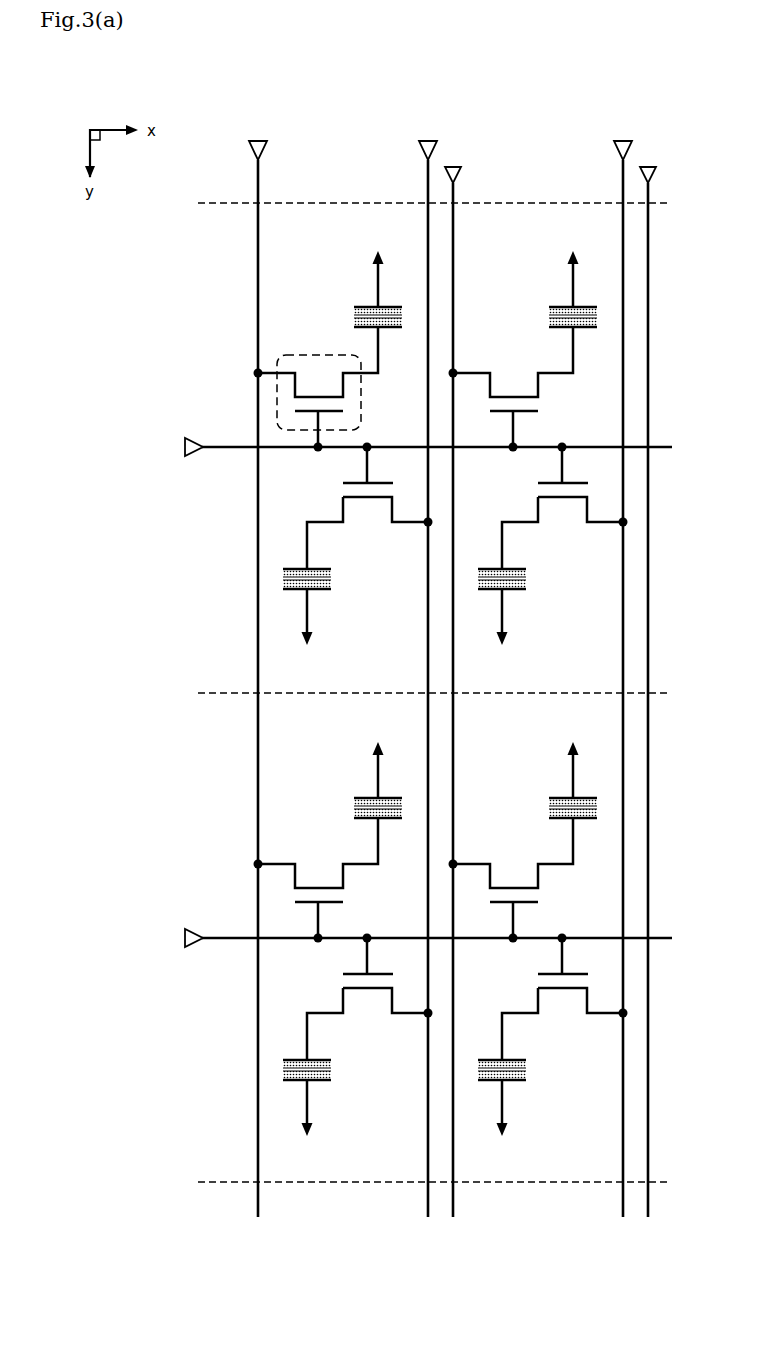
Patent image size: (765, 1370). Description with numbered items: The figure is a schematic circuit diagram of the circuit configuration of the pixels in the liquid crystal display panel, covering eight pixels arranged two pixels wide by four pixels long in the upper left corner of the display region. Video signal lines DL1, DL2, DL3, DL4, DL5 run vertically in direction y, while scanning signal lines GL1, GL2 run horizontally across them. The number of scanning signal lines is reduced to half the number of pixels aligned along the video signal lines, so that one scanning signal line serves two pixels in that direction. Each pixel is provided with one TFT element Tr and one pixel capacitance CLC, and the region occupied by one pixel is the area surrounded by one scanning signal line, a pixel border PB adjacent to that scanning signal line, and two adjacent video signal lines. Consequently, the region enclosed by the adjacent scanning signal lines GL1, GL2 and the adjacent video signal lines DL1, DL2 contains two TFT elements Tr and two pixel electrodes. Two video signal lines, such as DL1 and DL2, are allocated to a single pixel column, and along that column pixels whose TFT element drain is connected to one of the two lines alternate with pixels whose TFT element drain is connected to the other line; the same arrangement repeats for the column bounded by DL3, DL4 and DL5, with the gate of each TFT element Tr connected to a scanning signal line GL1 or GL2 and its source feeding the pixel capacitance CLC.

The video signal line DL1 is at (259, 665).
The video signal line DL2 is at (427, 665).
The video signal line DL3 is at (471, 689).
The video signal line DL4 is at (622, 665).
The video signal line DL5 is at (665, 689).
The scanning signal line GL1 is at (404, 449).
The scanning signal line GL2 is at (404, 940).
The pixel border PB is at (414, 692).
The TFT element Tr is at (265, 403).
The pixel capacitance CLC is at (348, 306).